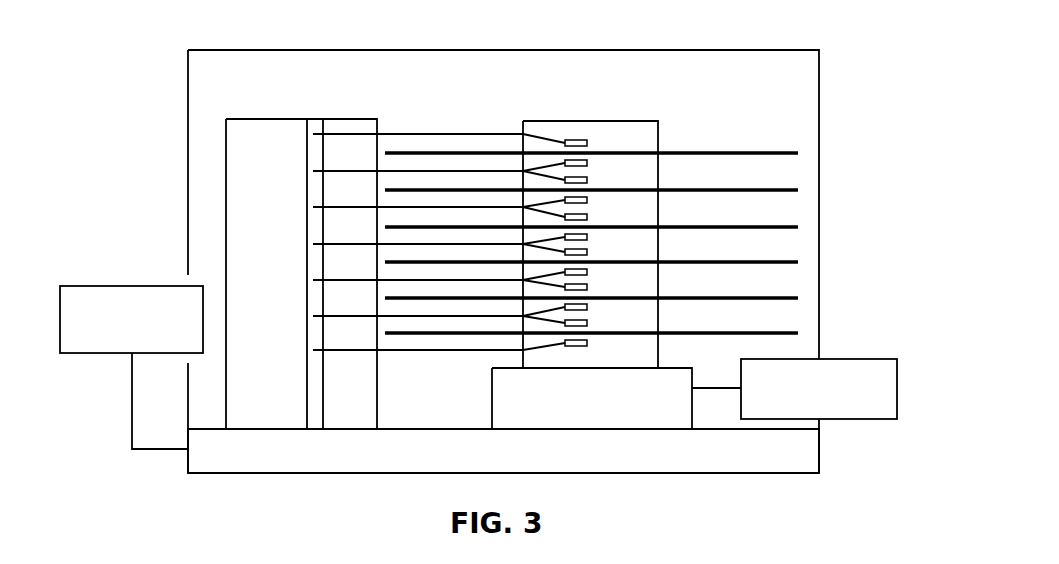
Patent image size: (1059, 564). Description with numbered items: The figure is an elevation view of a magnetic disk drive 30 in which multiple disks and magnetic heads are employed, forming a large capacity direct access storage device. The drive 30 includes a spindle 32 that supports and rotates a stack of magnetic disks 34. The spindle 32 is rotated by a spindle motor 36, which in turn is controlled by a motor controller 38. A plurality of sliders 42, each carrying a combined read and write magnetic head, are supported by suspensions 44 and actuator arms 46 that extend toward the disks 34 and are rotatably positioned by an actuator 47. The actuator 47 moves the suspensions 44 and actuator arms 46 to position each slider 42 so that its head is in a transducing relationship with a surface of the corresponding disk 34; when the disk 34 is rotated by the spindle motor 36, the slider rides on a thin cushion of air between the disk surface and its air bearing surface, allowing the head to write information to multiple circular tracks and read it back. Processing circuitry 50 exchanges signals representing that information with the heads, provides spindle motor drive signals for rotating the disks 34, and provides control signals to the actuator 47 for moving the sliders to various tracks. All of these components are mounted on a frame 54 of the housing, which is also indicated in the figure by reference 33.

The magnetic disk drive 30 is at (705, 126).
The spindle 32 is at (648, 121).
The housing 33 is at (759, 50).
The magnetic disk 34 is at (796, 154).
The spindle motor 36 is at (604, 409).
The motor controller 38 is at (855, 419).
The slider 42 is at (588, 162).
The suspension 44 is at (556, 177).
The actuator arm 46 is at (492, 171).
The actuator 47 is at (255, 122).
The processing circuitry 50 is at (103, 286).
The frame 54 is at (243, 473).